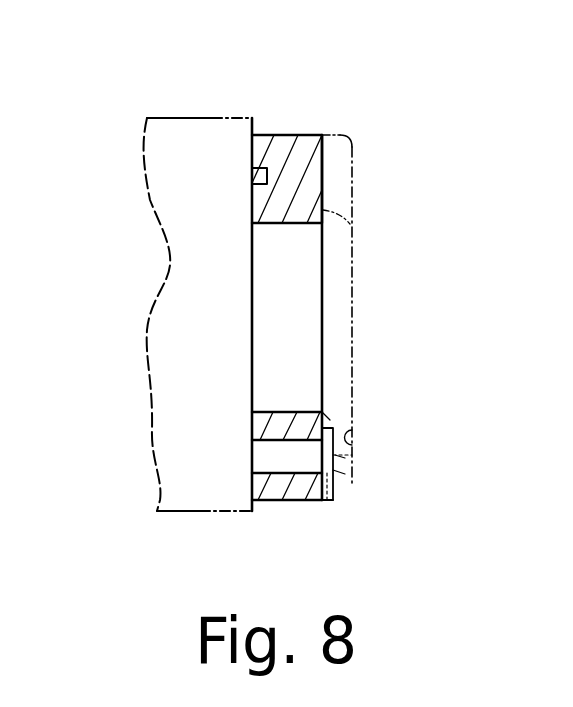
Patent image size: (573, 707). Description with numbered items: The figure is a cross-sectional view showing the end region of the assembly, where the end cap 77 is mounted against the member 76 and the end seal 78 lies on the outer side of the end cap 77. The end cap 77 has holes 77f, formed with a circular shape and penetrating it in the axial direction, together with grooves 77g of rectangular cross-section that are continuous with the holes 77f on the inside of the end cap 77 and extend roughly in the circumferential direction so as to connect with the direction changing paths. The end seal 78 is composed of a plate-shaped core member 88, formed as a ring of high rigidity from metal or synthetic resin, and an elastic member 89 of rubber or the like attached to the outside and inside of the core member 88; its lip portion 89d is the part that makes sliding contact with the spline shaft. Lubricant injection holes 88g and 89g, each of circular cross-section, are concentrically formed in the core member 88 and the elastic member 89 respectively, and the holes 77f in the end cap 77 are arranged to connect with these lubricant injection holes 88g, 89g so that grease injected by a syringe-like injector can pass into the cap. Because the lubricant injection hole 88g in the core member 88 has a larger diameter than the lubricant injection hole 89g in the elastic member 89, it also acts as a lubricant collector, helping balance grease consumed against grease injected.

The body 76 is at (163, 137).
The end cap 77 is at (299, 133).
The groove 77g is at (252, 178).
The hole 77f is at (273, 471).
The end seal 78 is at (356, 137).
The core member 88 is at (325, 500).
The lubricant injection hole 88g is at (345, 474).
The elastic member 89 is at (340, 500).
The lip portion 89d is at (330, 420).
The lubricant injection hole 89g is at (333, 462).